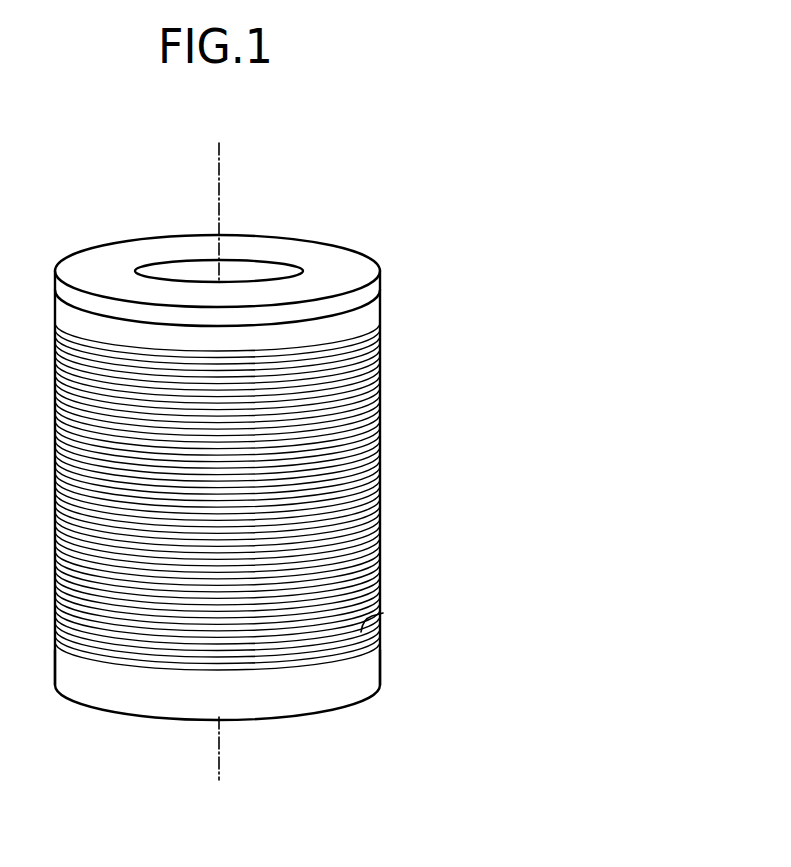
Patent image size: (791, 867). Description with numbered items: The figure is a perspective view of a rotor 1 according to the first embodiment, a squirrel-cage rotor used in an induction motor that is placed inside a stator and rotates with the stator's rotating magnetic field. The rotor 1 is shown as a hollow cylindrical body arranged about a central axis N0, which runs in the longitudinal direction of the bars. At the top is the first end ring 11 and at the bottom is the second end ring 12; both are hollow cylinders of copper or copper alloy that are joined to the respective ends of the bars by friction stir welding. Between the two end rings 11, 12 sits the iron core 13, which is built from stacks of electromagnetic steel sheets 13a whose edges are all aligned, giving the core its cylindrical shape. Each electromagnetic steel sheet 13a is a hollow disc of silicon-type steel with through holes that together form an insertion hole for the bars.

The rotor 1 is at (331, 225).
The central axis N0 is at (221, 185).
The first end ring 11 is at (383, 302).
The second end ring 12 is at (382, 663).
The iron core 13 is at (388, 421).
The electromagnetic steel sheet 13a is at (383, 613).